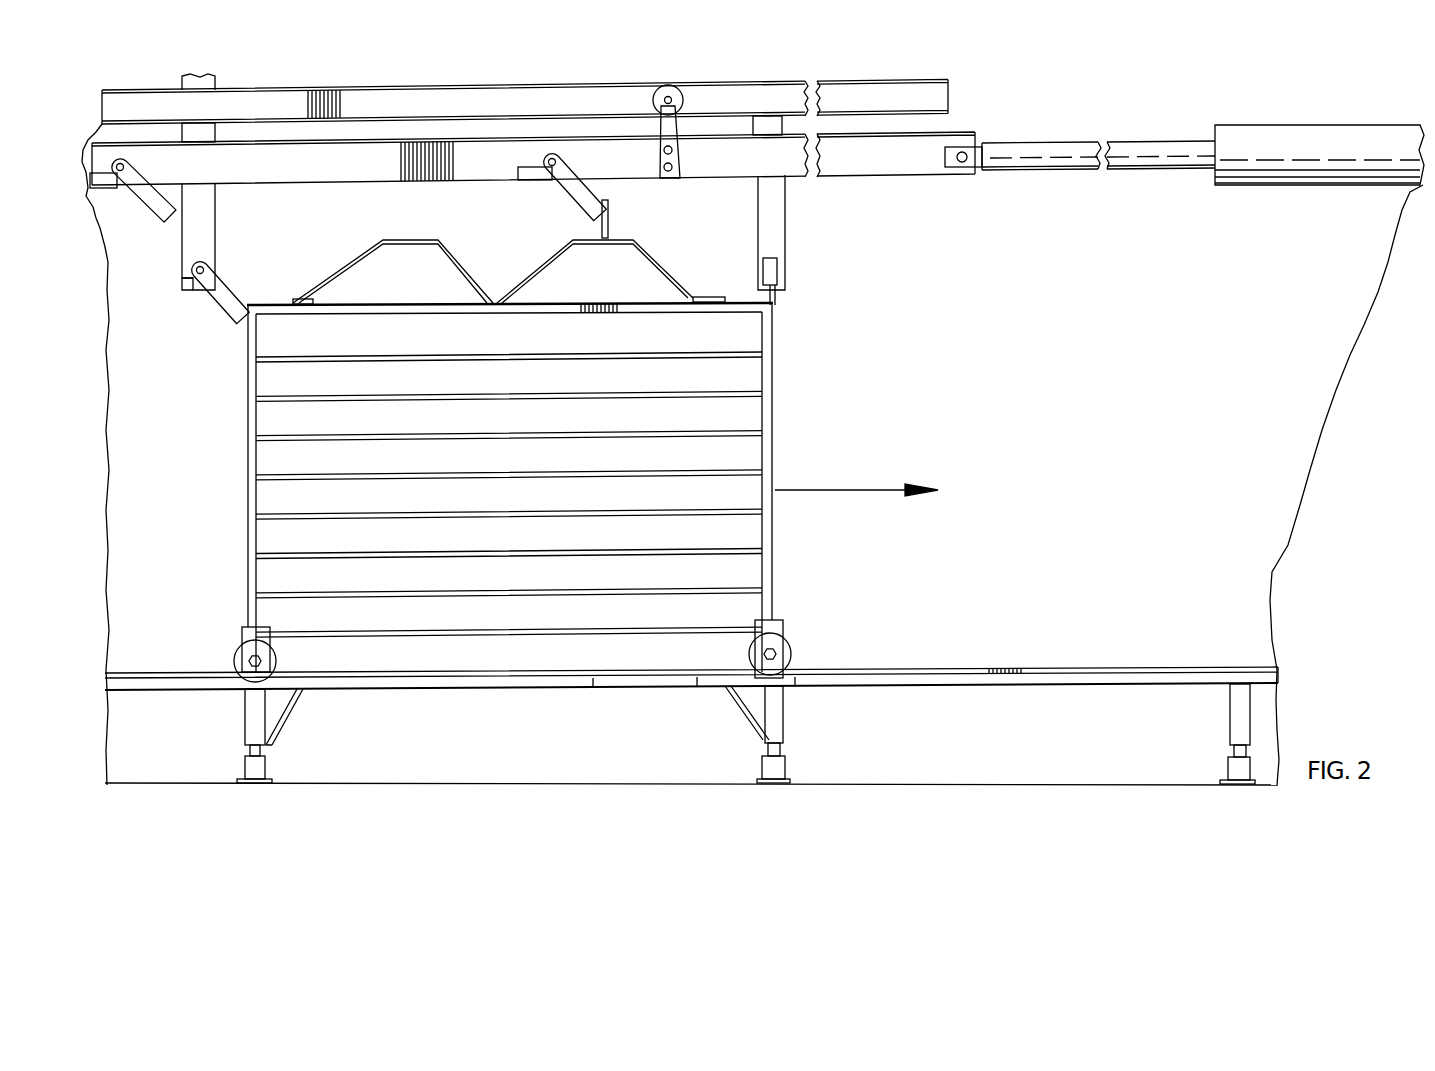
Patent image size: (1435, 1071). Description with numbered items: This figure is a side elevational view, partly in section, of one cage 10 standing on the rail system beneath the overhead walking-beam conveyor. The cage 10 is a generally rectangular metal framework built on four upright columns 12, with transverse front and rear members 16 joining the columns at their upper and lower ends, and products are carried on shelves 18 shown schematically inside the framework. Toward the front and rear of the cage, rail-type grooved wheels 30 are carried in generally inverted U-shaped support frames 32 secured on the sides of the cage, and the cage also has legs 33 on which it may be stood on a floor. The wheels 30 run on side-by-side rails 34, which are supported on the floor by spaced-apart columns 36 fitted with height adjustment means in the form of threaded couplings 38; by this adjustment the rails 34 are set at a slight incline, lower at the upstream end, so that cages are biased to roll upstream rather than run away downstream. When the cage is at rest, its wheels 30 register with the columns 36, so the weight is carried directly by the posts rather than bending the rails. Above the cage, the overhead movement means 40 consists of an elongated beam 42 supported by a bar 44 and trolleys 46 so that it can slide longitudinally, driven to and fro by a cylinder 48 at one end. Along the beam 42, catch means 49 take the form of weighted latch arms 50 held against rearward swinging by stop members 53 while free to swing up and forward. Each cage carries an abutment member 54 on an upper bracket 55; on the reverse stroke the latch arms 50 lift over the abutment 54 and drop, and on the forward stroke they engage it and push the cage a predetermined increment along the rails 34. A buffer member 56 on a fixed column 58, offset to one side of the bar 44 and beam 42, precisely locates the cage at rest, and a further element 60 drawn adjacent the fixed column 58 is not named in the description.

The cage 10 is at (495, 487).
The upright column 12 is at (247, 505).
The transverse front and rear member 16 is at (243, 333).
The shelf 18 is at (712, 470).
The rail-type grooved wheel 30 is at (238, 667).
The support frame 32 is at (242, 637).
The leg 33 is at (290, 720).
The rail 34 is at (597, 673).
The column 36 is at (253, 715).
The threaded coupling 38 is at (253, 751).
The overhead movement means 40 is at (998, 124).
The beam 42 is at (904, 164).
The bar 44 is at (842, 104).
The trolley 46 is at (683, 100).
The cylinder 48 is at (146, 215).
The catch means 49 is at (598, 167).
The latch arm 50 is at (578, 188).
The stop member 53 is at (530, 176).
The abutment member 54 is at (602, 218).
The upper bracket 55 is at (667, 260).
The buffer member 56 is at (225, 288).
The fixed column 58 is at (206, 225).
The post foot 60 is at (190, 293).